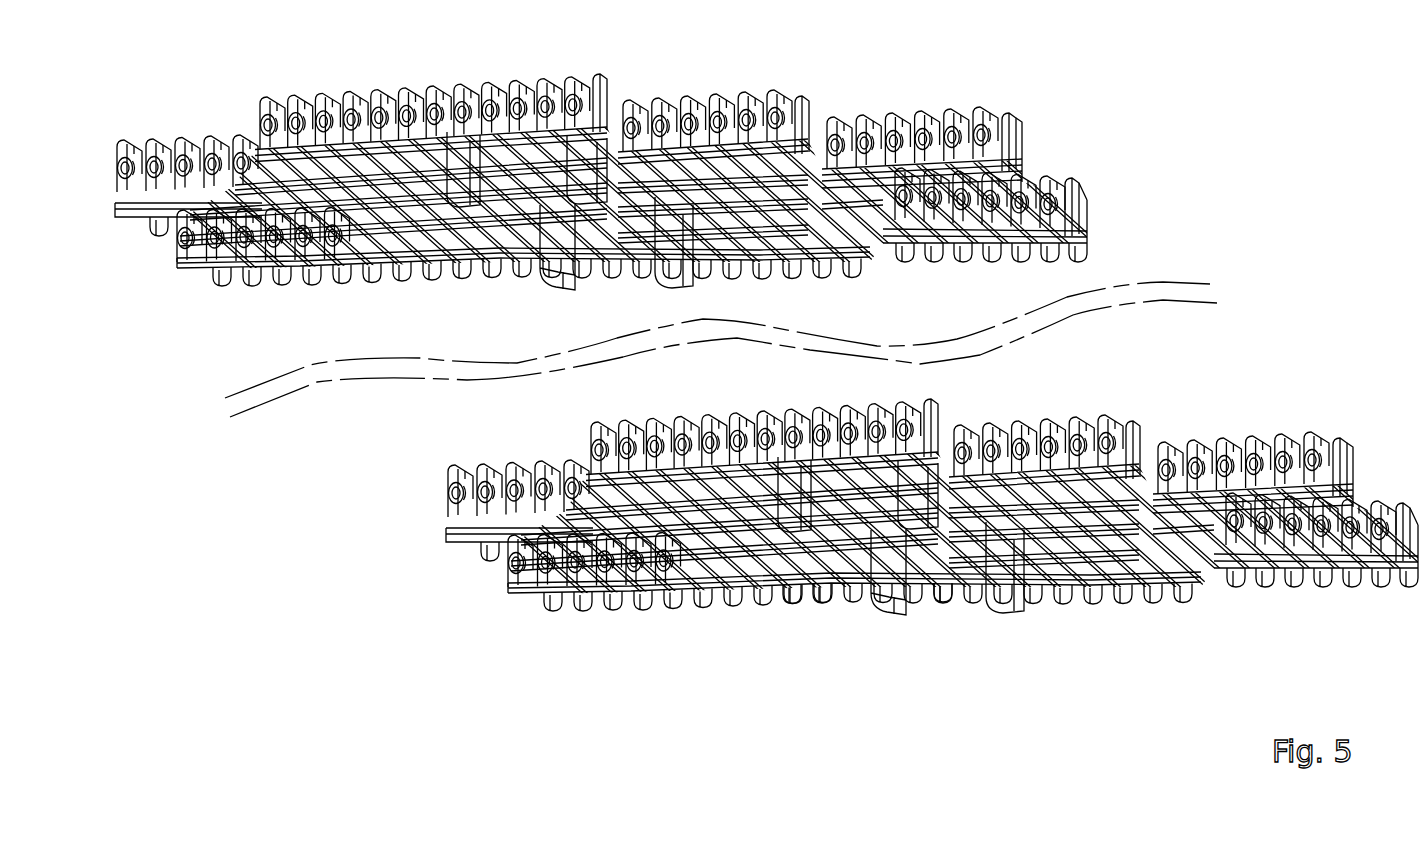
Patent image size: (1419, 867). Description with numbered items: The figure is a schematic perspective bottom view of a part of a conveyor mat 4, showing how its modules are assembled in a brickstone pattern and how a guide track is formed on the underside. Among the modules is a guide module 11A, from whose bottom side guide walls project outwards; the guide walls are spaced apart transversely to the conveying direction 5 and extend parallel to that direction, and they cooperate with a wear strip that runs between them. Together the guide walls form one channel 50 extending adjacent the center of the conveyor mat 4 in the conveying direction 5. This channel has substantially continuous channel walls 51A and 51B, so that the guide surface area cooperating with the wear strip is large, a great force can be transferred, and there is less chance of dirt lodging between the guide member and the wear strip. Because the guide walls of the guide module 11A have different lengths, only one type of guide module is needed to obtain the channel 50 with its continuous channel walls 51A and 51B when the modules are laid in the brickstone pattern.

The conveyor mat 4 is at (750, 363).
The guide module 11A is at (603, 97).
The channel 50 is at (927, 616).
The conveying direction 5 is at (1019, 708).
The channel wall 51A is at (816, 592).
The channel wall 51B is at (1027, 610).